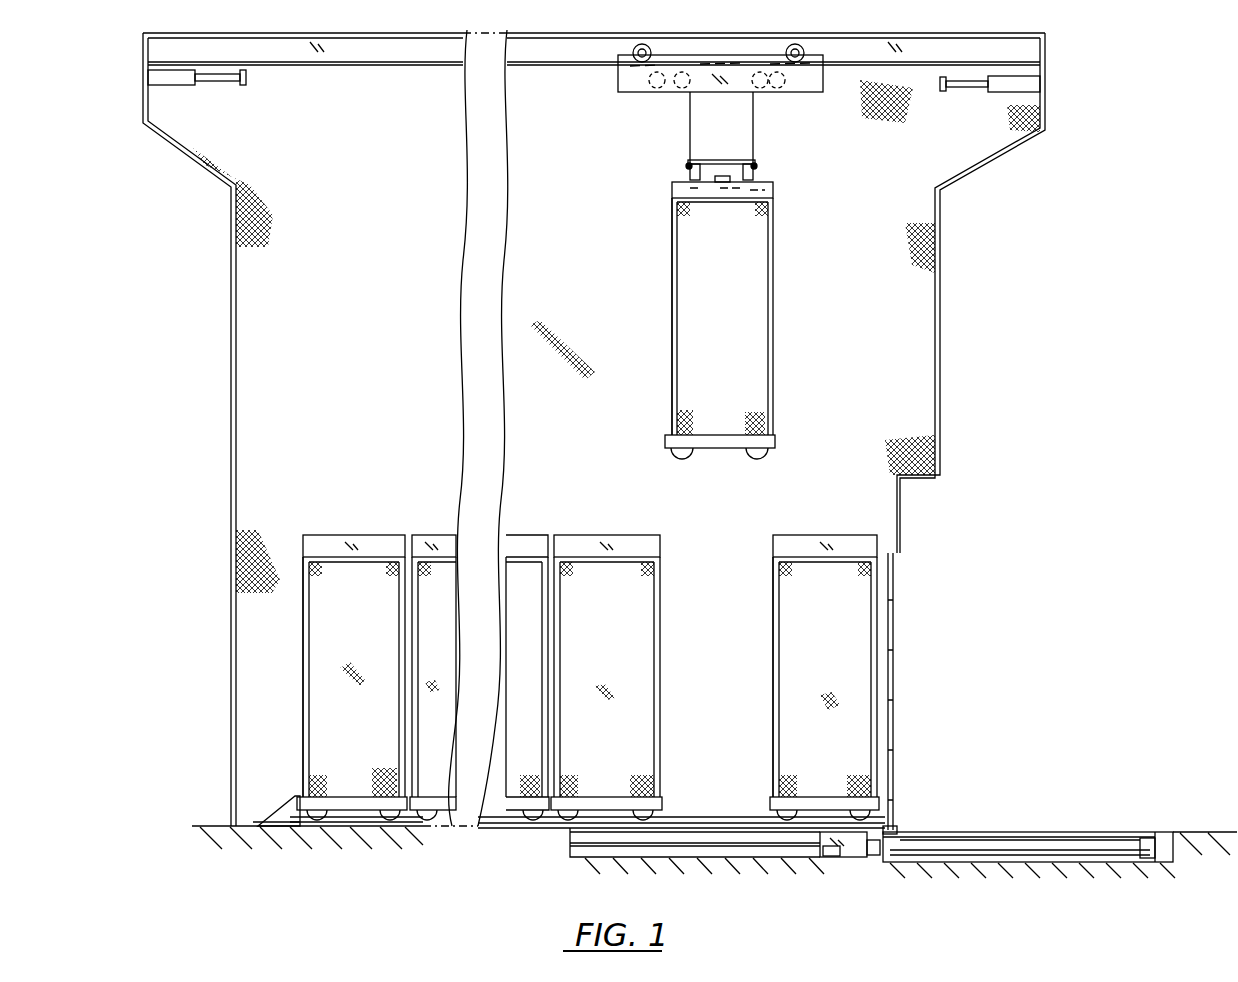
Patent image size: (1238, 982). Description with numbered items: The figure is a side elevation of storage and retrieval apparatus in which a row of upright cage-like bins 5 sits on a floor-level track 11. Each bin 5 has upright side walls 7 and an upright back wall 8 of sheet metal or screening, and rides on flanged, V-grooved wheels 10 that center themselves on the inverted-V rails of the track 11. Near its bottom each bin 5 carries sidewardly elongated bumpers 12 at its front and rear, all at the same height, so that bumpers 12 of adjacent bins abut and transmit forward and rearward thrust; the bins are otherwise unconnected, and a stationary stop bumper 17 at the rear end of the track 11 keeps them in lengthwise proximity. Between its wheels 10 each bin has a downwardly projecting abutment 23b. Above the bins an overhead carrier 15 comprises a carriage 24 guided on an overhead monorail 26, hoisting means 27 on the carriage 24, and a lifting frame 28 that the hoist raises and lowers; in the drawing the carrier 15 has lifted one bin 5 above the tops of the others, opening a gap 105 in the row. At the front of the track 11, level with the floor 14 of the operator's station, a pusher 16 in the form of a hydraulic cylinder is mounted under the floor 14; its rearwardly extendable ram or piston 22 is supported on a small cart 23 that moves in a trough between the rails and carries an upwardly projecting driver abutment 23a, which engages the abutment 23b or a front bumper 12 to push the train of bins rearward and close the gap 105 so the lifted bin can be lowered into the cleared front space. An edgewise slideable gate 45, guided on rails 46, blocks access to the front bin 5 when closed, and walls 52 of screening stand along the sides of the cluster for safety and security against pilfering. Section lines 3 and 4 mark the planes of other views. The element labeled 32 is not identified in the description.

The section line 3- 3 is at (977, 823).
The section line 4- 4 is at (227, 518).
The upright cage or rack-like bin 5 is at (781, 350).
The upright side wall 7 is at (760, 232).
The upright back wall 8 is at (670, 326).
The wheels 10 is at (677, 456).
The track 11 is at (716, 817).
The bumper 12 is at (665, 442).
The floor 14 is at (1075, 832).
The overhead carrier 15 is at (650, 102).
The pusher 16 is at (1020, 842).
The stationary stop bumper 17 is at (291, 797).
The ram or piston 22 is at (880, 856).
The small cart 23 is at (845, 858).
The driver abutment 23a is at (822, 843).
The downwardly projecting abutment 23b is at (703, 451).
The carriage 24 is at (622, 92).
The overhead monorail 26 is at (582, 60).
The hoisting means 27 is at (766, 150).
The lifting frame 28 is at (773, 190).
The top plate 32 is at (672, 190).
The edgewise slideable gate 45 is at (895, 592).
The rails 46 is at (897, 830).
The walls 52 is at (231, 253).
The gap 105 is at (711, 565).